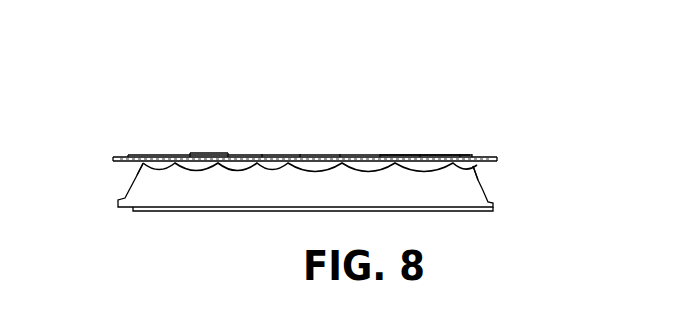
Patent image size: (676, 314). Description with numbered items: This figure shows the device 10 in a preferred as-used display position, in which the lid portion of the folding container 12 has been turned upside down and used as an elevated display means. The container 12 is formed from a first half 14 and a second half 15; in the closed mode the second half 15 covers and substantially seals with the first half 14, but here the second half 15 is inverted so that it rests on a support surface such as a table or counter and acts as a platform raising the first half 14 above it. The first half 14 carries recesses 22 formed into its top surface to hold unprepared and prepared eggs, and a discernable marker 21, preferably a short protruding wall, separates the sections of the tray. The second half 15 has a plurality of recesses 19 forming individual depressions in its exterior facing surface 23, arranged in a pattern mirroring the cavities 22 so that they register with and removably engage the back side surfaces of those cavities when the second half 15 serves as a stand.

The device 10 is at (370, 107).
The folding container 12 is at (420, 156).
The first half 14 is at (130, 157).
The second half 15 is at (490, 195).
The recesses 19 is at (203, 173).
The discernable marker 21 is at (202, 154).
The recesses 22 is at (143, 165).
The exterior facing surface 23 is at (478, 183).